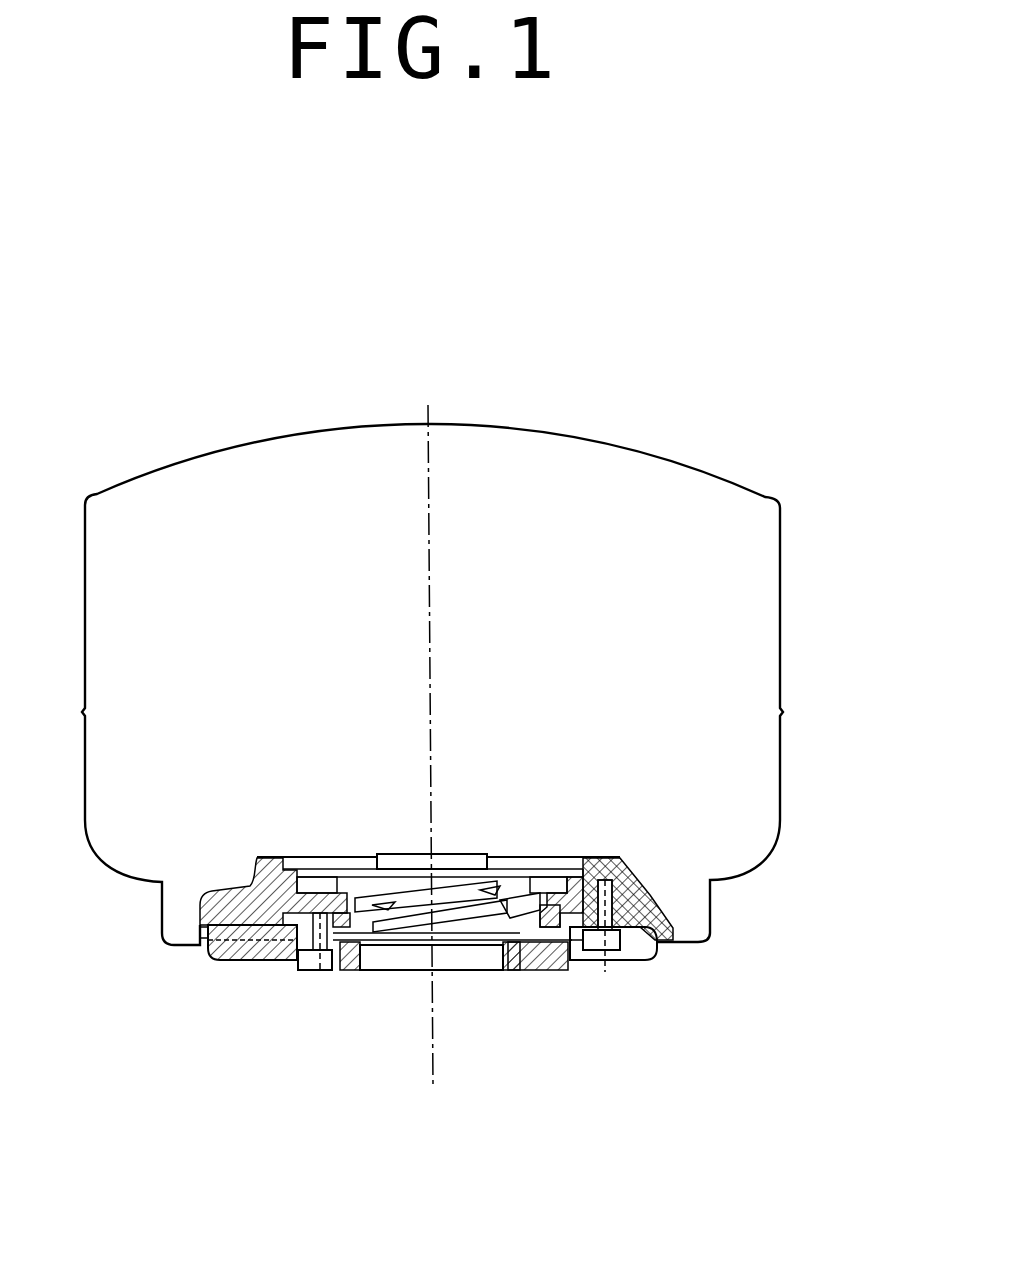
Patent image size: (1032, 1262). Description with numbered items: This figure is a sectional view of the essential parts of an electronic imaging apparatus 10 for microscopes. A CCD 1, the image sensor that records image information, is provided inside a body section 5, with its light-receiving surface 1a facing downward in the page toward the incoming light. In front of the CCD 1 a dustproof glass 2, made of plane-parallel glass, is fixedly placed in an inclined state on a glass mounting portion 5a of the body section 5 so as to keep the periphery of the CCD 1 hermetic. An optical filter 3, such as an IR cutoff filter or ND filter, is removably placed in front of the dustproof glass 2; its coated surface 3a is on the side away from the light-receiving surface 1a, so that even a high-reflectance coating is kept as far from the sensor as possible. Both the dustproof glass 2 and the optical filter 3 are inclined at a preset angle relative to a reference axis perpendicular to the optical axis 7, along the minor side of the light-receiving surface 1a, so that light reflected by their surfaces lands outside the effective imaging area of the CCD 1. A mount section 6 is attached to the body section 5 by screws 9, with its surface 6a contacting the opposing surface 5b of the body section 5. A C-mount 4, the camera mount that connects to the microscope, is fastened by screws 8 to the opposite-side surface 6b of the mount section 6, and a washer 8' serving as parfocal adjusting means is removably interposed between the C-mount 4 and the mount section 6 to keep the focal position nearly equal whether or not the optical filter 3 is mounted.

The CCD 1 is at (407, 868).
The light-receiving surface 1a is at (465, 868).
The dustproof glass 2 is at (343, 962).
The optical filter 3 is at (472, 925).
The coated surface 3a is at (405, 930).
The C-mount 4 is at (535, 940).
The body section 5 is at (753, 640).
The glass mounting portion 5a is at (352, 868).
The surface 5b is at (620, 858).
The mount section 6 is at (225, 960).
The surface 6a is at (610, 967).
The opposite-side surface 6b is at (270, 963).
The optical axis 7 is at (433, 1023).
The screws 8 is at (261, 995).
The washer 8' is at (600, 1037).
The screws 9 is at (623, 967).
The electronic imaging apparatus 10 is at (187, 430).